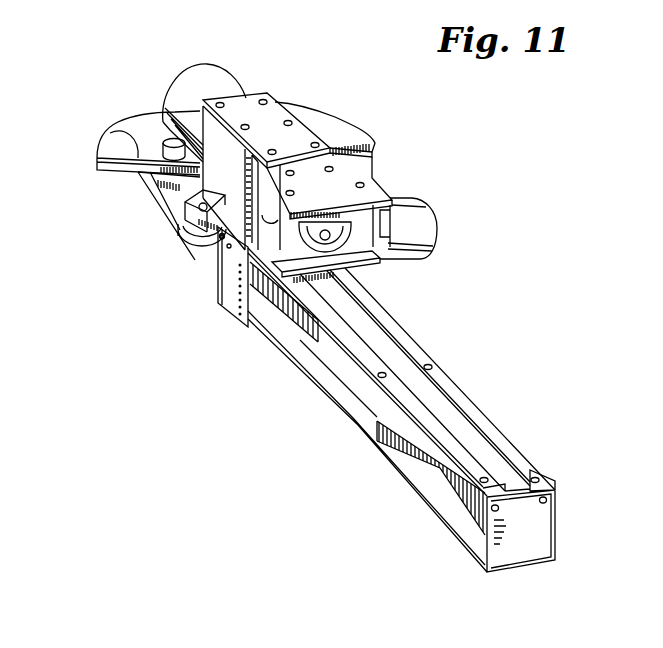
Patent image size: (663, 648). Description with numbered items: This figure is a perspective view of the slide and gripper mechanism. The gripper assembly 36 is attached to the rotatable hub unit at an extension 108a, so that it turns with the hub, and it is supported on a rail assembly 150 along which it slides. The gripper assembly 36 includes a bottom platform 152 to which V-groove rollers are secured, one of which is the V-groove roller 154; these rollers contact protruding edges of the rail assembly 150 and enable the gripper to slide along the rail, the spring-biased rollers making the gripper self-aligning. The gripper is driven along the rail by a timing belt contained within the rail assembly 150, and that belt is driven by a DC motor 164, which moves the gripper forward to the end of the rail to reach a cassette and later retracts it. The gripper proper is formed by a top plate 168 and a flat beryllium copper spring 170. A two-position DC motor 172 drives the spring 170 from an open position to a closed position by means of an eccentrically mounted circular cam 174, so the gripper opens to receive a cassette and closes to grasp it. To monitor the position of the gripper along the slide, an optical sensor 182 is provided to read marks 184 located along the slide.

The gripper assembly 36 is at (328, 104).
The extension 108a is at (112, 135).
The rail assembly 150 is at (493, 420).
The bottom platform 152 is at (184, 204).
The V-groove roller 154 is at (190, 255).
The DC motor 164 is at (436, 238).
The top plate 168 is at (383, 188).
The flat beryllium copper spring 170 is at (373, 280).
The two-position DC motor 172 is at (188, 64).
The eccentrically mounted circular cam 174 is at (313, 250).
The optical sensor 182 is at (224, 300).
The marks 184 is at (417, 458).